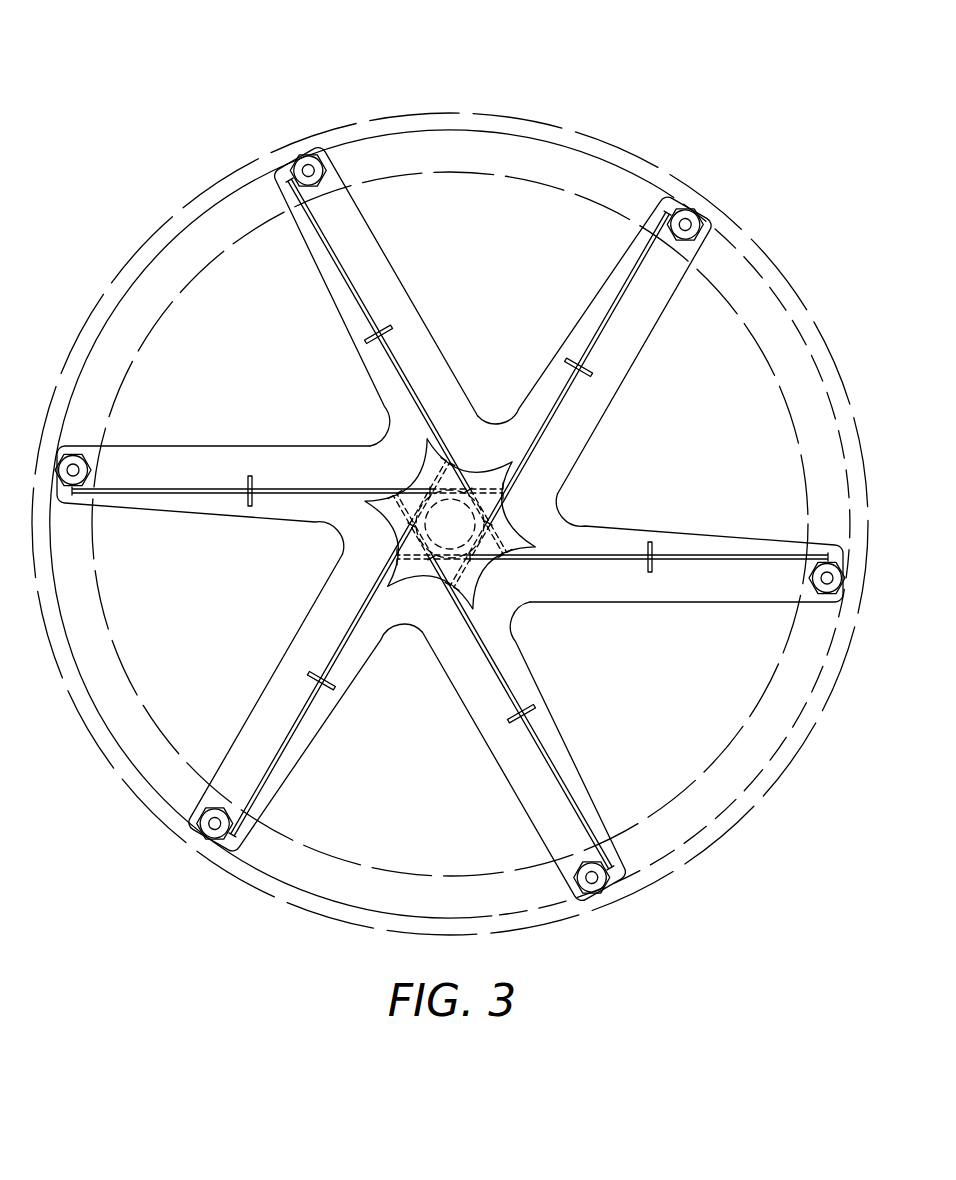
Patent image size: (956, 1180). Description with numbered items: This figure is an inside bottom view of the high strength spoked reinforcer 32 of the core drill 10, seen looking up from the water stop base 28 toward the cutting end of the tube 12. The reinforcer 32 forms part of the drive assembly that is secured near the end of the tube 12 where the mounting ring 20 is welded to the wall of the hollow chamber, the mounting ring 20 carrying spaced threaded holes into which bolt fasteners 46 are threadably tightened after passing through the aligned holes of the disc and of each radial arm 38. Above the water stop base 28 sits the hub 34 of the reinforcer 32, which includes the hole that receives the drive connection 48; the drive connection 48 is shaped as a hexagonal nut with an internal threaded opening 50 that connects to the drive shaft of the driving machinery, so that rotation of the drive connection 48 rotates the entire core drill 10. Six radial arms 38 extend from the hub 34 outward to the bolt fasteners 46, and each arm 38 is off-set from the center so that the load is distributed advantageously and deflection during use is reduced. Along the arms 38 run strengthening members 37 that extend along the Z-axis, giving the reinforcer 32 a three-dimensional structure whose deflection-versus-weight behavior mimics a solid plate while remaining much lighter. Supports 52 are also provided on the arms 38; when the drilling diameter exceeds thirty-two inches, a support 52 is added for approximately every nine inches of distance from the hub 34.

The core drill 10 is at (450, 475).
The tube 12 is at (450, 524).
The mounting ring 20 is at (450, 524).
The water stop base 28 is at (396, 512).
The high strength spoked reinforcer 32 is at (385, 524).
The hub 34 is at (481, 493).
The strengthening member 37 is at (450, 524).
The radial arm 38 is at (686, 548).
The bolt fastener 46 is at (450, 524).
The drive connection 48 is at (450, 524).
The internal threaded opening 50 is at (461, 578).
The support 52 is at (450, 524).